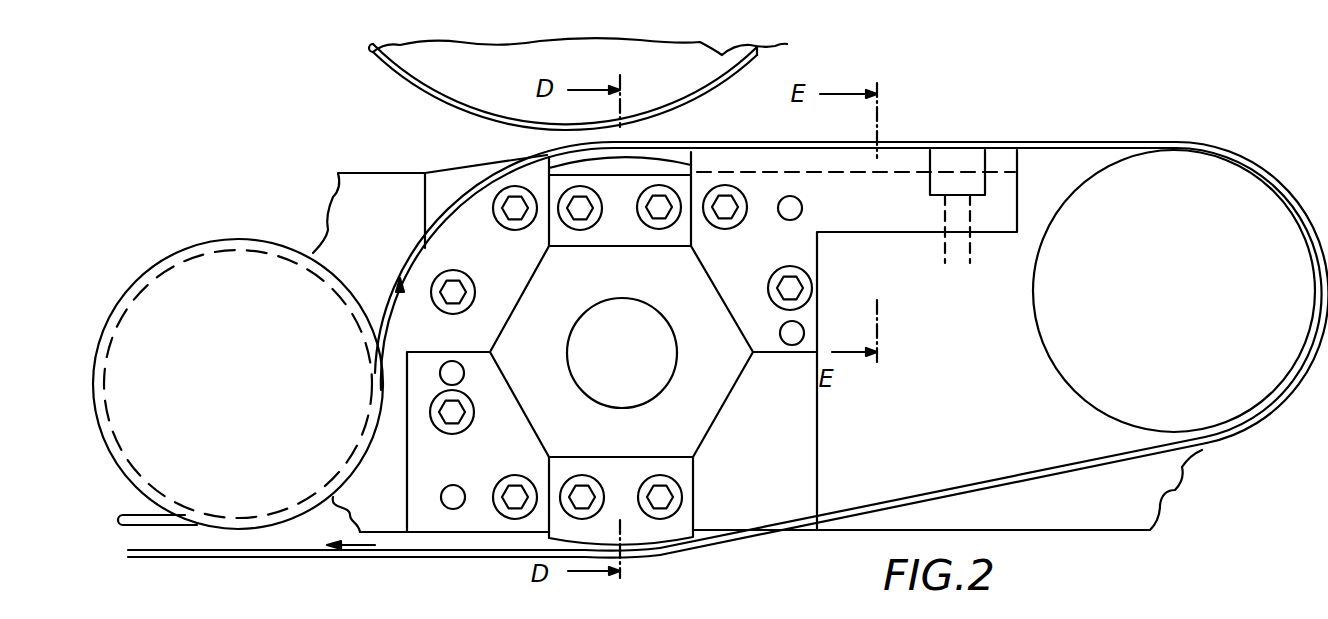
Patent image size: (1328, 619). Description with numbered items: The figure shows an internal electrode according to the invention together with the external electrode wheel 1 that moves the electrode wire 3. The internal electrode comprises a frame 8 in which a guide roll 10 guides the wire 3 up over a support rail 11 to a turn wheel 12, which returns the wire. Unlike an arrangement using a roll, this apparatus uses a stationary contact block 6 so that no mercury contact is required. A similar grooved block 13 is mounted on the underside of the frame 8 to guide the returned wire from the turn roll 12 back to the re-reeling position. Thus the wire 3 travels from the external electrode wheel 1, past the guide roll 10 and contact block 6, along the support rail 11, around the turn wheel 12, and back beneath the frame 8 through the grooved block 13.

The external electrode wheel 1 is at (587, 80).
The electrode wire 3 is at (708, 93).
The stationary contact block 6 is at (652, 163).
The frame 8 is at (380, 172).
The guide roll 10 is at (192, 263).
The support rail 11 is at (902, 180).
The turn wheel 12 is at (1213, 173).
The grooved block 13 is at (680, 521).